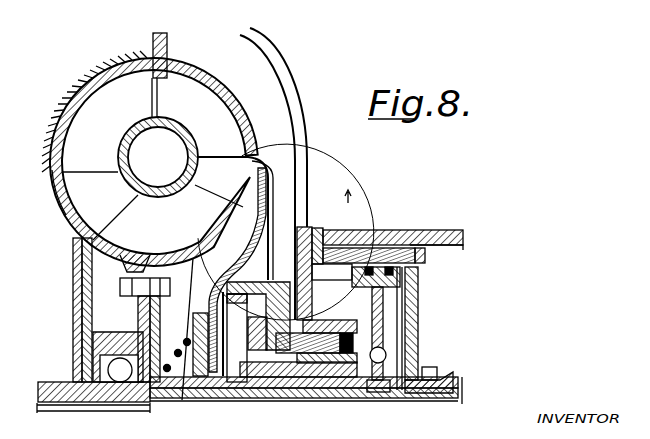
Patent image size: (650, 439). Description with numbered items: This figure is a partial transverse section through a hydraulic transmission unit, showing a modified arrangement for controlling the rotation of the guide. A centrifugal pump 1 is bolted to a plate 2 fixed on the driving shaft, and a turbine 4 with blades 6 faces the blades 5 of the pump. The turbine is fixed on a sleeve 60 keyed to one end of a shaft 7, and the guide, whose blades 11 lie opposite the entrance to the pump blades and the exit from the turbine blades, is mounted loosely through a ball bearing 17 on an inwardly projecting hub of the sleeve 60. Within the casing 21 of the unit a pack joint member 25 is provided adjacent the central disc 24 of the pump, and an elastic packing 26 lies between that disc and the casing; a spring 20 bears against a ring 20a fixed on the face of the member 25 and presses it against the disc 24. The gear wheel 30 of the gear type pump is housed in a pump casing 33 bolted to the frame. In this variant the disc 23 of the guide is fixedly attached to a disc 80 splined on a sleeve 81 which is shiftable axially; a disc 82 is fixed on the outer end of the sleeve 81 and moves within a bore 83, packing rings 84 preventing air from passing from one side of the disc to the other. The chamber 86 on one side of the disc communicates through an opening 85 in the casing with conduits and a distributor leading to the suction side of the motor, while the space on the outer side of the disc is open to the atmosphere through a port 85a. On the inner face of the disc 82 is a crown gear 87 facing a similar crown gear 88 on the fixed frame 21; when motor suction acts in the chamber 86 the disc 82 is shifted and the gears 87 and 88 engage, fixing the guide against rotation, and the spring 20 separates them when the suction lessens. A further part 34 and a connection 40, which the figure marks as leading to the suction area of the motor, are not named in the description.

The centrifugal pump 1 is at (228, 106).
The plate 2 is at (77, 93).
The turbine 4 is at (64, 208).
The blades of the pump 5 is at (222, 142).
The blades of the turbine 6 is at (75, 160).
The shaft 7 is at (457, 402).
The blades of the guide 11 is at (95, 235).
The ball bearing 17 is at (97, 340).
The spring 20 is at (167, 366).
The ring 20a is at (182, 400).
The casing 21 is at (323, 206).
The disc of the guide 23 is at (140, 307).
The central disc of the pump 24 is at (245, 265).
The pack joint member 25 is at (270, 290).
The elastic packing 26 is at (220, 378).
The gear wheel 30 is at (283, 378).
The pump casing 33 is at (203, 322).
The nut 34 is at (430, 366).
The suction duct 40 is at (281, 210).
The sleeve 60 is at (54, 383).
The disc 80 is at (163, 267).
The sleeve 81 is at (313, 392).
The disc 82 is at (380, 317).
The bore 83 is at (362, 229).
The packing rings 84 is at (425, 253).
The opening 85 is at (362, 252).
The port 85a is at (437, 336).
The chamber 86 is at (400, 292).
The crown gear 87 is at (400, 353).
The crown gear 88 is at (355, 290).